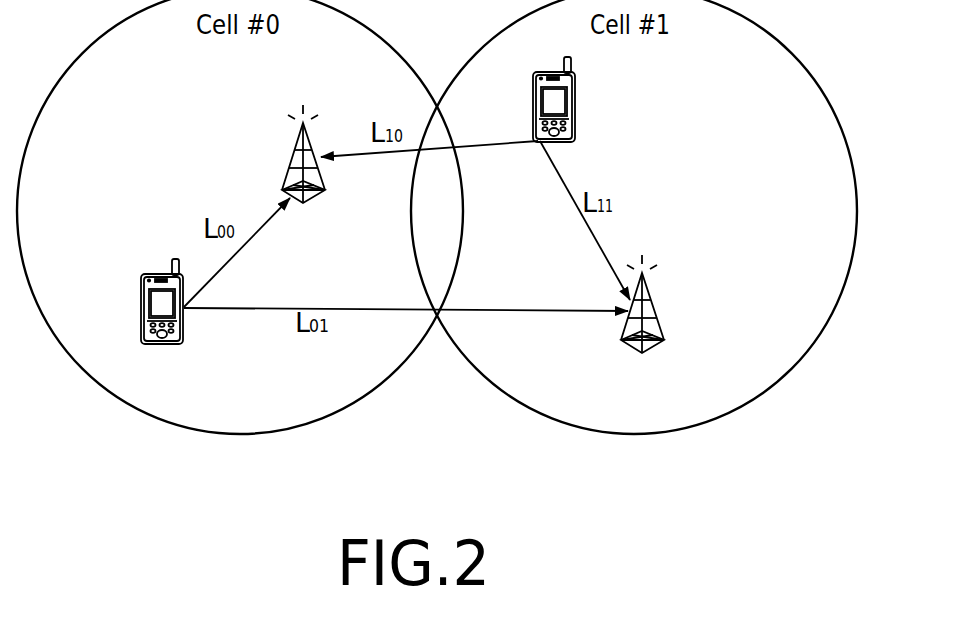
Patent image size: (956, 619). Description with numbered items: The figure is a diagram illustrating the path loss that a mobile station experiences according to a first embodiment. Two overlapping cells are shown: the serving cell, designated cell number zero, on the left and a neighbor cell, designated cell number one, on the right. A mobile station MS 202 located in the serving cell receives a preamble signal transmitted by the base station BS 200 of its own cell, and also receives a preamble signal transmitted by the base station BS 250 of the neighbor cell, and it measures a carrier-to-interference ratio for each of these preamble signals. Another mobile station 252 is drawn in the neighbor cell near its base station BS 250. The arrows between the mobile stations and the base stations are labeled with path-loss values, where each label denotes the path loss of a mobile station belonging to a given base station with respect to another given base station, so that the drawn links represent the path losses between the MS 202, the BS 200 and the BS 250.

The BS 200 is at (282, 160).
The MS 202 is at (139, 303).
The BS 250 is at (659, 306).
The mobile station in cell #1 252 is at (576, 103).